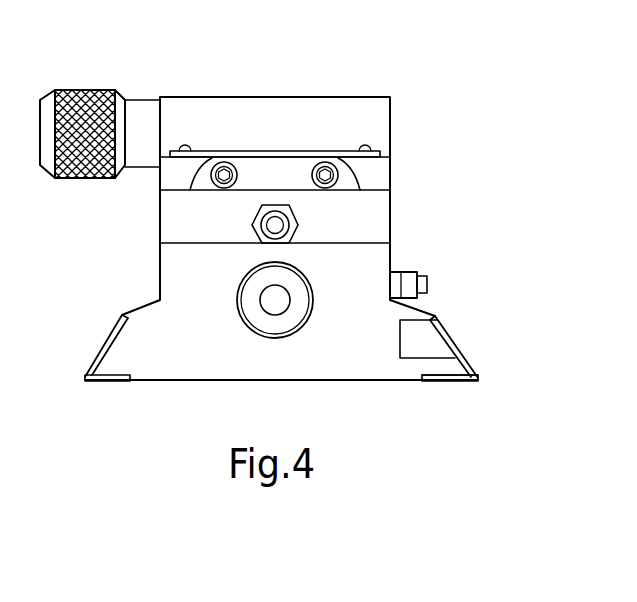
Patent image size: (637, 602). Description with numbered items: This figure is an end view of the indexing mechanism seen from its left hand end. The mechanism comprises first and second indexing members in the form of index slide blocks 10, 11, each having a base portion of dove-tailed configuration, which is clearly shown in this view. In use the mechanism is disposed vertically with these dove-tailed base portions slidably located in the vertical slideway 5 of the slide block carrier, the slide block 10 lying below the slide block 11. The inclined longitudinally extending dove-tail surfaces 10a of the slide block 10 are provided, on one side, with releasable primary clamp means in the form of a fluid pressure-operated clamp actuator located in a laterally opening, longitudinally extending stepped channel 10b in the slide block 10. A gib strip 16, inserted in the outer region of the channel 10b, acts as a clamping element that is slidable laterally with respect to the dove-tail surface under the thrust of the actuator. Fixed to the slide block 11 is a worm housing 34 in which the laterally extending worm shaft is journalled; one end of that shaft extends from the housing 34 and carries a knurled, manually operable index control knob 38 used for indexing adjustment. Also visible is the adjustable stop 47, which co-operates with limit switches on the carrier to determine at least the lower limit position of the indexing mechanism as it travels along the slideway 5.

The vertical slideway 5 is at (275, 205).
The index slide block 10 is at (450, 282).
The dove-tail surfaces 10a is at (108, 340).
The channel 10b is at (425, 357).
The index slide block 11 is at (398, 118).
The gib strip 16 is at (432, 334).
The worm housing 34 is at (184, 104).
The index control knob 38 is at (94, 90).
The adjustable stop 47 is at (409, 274).